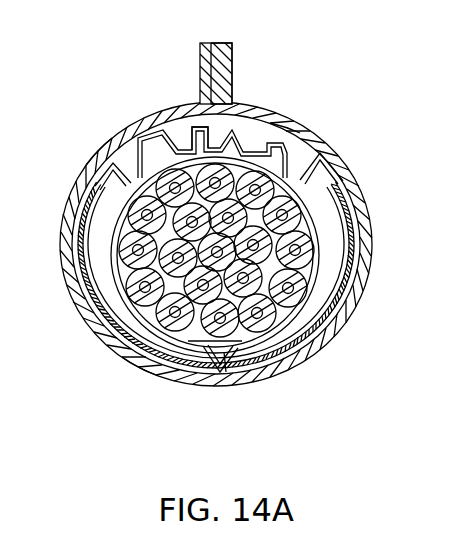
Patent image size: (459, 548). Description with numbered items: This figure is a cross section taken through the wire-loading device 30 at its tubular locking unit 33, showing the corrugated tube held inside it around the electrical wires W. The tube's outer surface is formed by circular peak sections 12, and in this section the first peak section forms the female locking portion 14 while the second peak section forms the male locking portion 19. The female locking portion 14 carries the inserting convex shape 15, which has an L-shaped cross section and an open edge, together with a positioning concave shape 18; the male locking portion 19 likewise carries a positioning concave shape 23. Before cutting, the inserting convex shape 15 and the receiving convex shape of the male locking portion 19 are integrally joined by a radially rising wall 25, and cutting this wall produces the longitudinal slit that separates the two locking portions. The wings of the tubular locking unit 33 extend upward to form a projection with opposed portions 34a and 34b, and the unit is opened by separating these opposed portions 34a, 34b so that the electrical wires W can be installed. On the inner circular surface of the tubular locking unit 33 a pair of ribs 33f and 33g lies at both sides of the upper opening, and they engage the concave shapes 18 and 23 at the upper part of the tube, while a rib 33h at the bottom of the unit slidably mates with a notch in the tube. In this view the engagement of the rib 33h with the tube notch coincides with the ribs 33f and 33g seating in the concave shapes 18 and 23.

The peak section 12 is at (327, 323).
The female locking portion 14 is at (157, 128).
The inserting convex shape 15 is at (207, 124).
The positioning concave shape 18 is at (121, 176).
The male locking portion 19 is at (284, 131).
The positioning concave shape 23 is at (345, 188).
The radially rising wall 25 is at (226, 353).
The wire-loading device 30 is at (318, 127).
The tubular locking unit 33 is at (372, 248).
The rib 33f is at (123, 160).
The rib 33g is at (330, 152).
The rib 33h is at (220, 371).
The opposed portion 34a is at (200, 52).
The opposed portion 34b is at (233, 75).
The electrical wires W is at (140, 376).